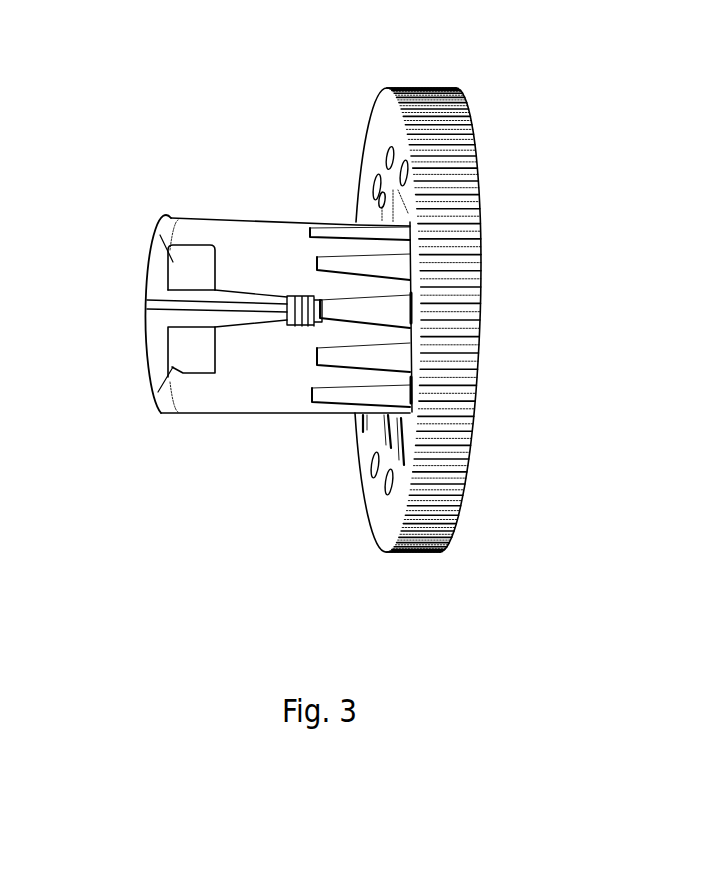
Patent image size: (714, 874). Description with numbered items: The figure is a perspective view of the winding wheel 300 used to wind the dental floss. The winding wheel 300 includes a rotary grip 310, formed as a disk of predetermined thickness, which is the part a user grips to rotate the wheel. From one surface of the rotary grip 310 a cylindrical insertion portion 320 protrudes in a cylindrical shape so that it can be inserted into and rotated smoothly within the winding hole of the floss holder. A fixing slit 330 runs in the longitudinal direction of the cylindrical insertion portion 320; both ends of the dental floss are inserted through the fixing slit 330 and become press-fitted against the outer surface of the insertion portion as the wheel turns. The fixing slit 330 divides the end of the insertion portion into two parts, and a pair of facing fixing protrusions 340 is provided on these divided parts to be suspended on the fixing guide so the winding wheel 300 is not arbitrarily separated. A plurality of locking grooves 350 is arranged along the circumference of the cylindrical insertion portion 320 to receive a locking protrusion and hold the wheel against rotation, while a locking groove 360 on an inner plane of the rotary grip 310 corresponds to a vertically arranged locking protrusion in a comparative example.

The winding wheel 300 is at (293, 111).
The rotary grip 310 is at (470, 303).
The cylindrical insertion portion 320 is at (240, 372).
The fixing slit 330 is at (162, 318).
The fixing protrusion 340 is at (177, 270).
The locking groove 350 is at (382, 265).
The locking groove 360 is at (402, 160).